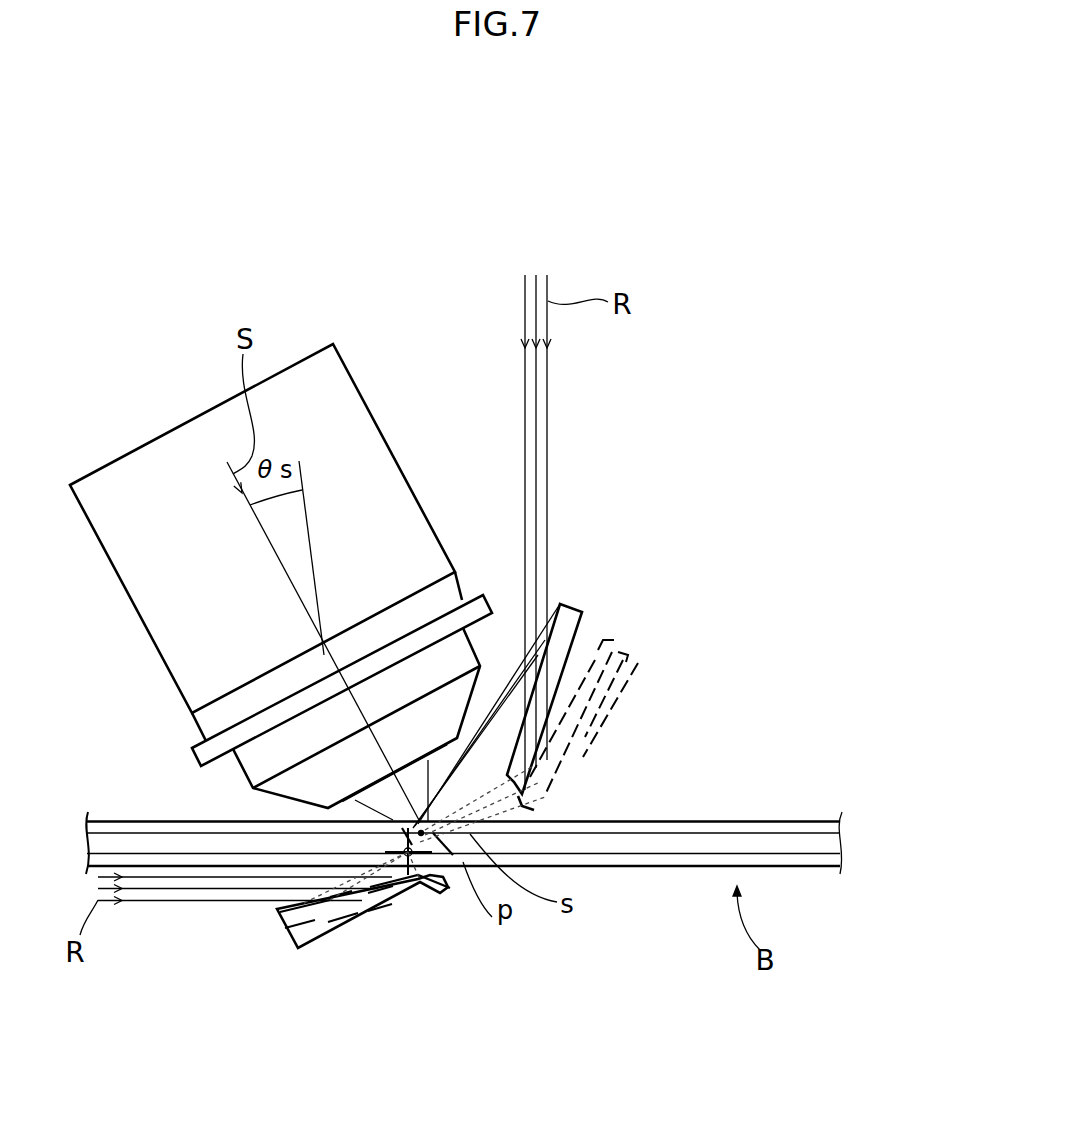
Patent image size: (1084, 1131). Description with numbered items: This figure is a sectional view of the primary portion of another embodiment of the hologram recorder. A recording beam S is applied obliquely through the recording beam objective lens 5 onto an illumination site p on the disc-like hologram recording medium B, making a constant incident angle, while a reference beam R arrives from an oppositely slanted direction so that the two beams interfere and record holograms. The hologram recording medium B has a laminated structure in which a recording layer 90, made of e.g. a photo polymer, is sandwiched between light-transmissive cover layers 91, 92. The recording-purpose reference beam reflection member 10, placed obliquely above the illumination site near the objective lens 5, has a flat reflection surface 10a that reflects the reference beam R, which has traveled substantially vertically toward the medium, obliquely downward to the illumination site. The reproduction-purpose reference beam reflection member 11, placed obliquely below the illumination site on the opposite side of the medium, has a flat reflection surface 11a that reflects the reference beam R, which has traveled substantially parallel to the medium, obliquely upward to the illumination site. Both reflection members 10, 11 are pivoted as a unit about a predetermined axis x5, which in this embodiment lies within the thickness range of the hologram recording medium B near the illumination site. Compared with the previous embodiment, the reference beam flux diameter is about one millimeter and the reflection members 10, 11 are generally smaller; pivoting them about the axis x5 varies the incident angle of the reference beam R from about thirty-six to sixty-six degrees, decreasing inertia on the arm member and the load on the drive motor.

The recording beam objective lens 5 is at (150, 635).
The recording-purpose reference beam reflection member 10 is at (585, 610).
The reflection surface 10a is at (560, 602).
The reproduction-purpose reference beam reflection member 11 is at (300, 950).
The reflection surface 11a is at (352, 892).
The recording layer 90 is at (843, 845).
The cover layer 91 is at (832, 830).
The cover layer 92 is at (836, 862).
The predetermined axis x5 is at (406, 852).